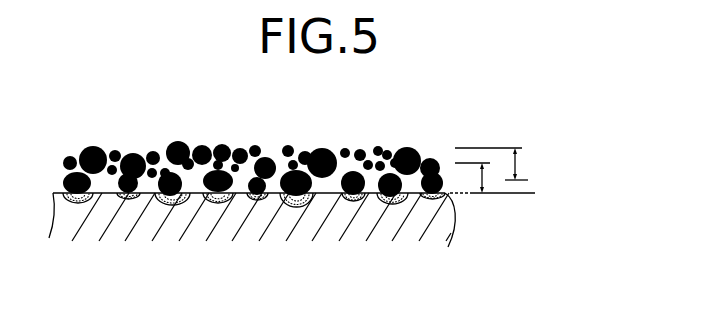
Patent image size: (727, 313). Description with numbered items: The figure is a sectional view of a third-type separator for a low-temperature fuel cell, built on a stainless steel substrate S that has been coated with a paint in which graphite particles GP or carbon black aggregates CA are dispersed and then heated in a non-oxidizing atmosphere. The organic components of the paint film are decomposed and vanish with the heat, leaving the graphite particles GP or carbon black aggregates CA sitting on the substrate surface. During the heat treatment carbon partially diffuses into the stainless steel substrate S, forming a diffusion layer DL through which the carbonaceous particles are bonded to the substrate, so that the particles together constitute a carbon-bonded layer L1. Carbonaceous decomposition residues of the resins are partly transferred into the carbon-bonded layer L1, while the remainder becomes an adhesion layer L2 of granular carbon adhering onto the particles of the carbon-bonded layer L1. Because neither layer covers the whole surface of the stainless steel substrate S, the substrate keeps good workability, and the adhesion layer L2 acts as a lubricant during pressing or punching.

The graphite particles GP is at (253, 146).
The carbon black aggregates CA is at (328, 148).
The diffusion layer DL is at (342, 195).
The stainless steel substrate S is at (433, 225).
The carbon-bonded layer L1 is at (483, 183).
The adhesion layer L2 is at (520, 162).